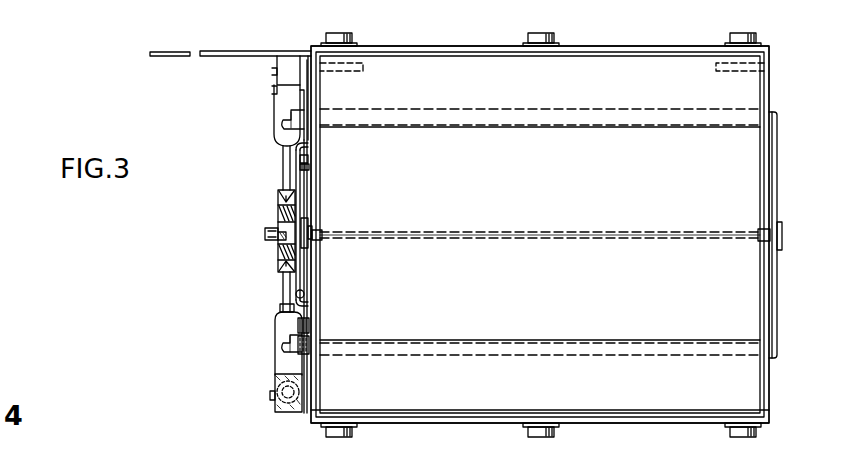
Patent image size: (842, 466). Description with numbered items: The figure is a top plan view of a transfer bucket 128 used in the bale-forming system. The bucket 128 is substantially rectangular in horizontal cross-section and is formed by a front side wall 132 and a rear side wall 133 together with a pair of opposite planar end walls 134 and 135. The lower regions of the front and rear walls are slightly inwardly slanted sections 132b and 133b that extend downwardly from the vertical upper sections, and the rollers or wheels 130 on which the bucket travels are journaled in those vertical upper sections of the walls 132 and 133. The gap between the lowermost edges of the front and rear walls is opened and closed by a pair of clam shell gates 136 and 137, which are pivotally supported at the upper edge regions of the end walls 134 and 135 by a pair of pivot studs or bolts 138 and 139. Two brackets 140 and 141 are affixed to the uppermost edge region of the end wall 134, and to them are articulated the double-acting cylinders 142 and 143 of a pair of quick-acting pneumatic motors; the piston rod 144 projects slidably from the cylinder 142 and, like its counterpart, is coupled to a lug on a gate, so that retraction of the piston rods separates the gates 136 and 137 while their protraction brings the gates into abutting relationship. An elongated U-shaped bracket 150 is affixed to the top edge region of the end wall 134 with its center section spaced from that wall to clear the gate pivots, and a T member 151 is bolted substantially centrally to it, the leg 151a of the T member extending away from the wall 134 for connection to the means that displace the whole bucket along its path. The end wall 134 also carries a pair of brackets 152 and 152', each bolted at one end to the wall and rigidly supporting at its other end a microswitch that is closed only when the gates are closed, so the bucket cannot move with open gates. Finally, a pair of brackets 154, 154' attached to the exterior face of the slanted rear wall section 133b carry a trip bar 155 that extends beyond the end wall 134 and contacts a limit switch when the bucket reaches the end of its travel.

The bucket 128 is at (423, 427).
The rollers or wheels 130 is at (552, 38).
The front side wall 132 is at (656, 424).
The inwardly slanted section 132b is at (570, 358).
The rear side wall 133 is at (407, 48).
The inwardly slanted section 133b is at (563, 97).
The end wall 134 is at (318, 200).
The end wall 135 is at (776, 93).
The clam shell gate 136 is at (308, 278).
The clam shell gate 137 is at (310, 176).
The pivot stud or bolt 138 is at (308, 225).
The pivot stud or bolt 139 is at (760, 231).
The bracket 140 is at (303, 408).
The bracket 141 is at (286, 74).
The double-acting cylinder 142 is at (278, 347).
The double-acting cylinder 143 is at (280, 101).
The piston rod 144 is at (289, 306).
The U-shaped bracket 150 is at (294, 293).
The T member 151 is at (285, 242).
The leg 151a is at (268, 226).
The bracket 152 is at (257, 367).
The bracket 152' is at (258, 123).
The bracket 154 is at (363, 81).
The slot 154' is at (724, 81).
The trip bar 155 is at (190, 40).